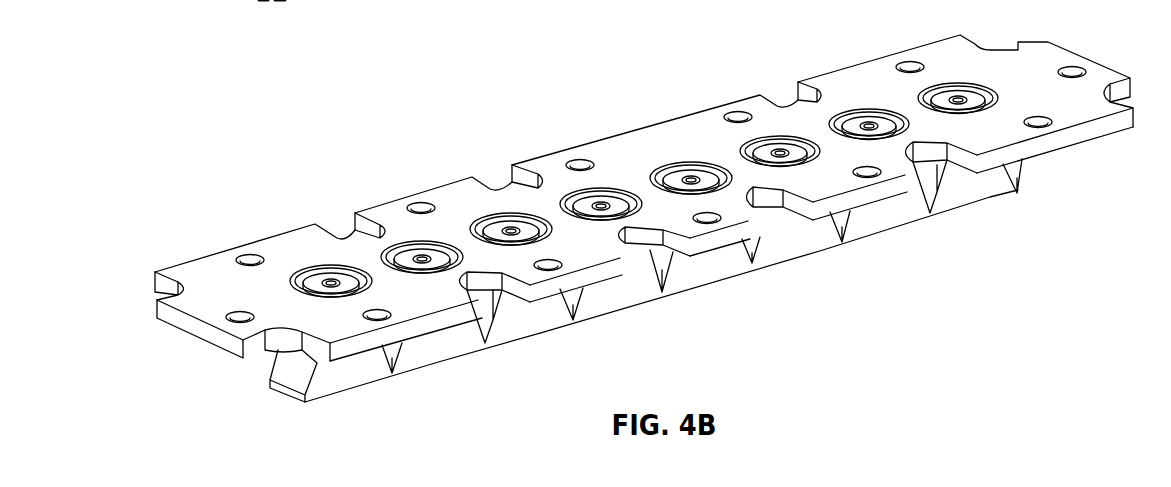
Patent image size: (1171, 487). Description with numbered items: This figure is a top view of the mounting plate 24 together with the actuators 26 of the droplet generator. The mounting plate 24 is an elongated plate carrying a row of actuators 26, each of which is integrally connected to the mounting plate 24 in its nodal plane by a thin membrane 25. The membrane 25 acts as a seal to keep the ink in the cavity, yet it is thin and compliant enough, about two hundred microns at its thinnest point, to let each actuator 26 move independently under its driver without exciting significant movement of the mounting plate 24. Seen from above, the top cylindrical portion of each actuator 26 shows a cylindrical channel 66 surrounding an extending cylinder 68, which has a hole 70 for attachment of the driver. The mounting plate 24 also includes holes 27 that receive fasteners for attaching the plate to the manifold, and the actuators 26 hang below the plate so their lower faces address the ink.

The mounting plate 24 is at (982, 58).
The membrane 25 is at (576, 202).
The actuators 26 is at (625, 291).
The holes 27 is at (867, 172).
The cylindrical channel 66 is at (720, 182).
The extending cylinder 68 is at (672, 177).
The hole 70 is at (690, 178).